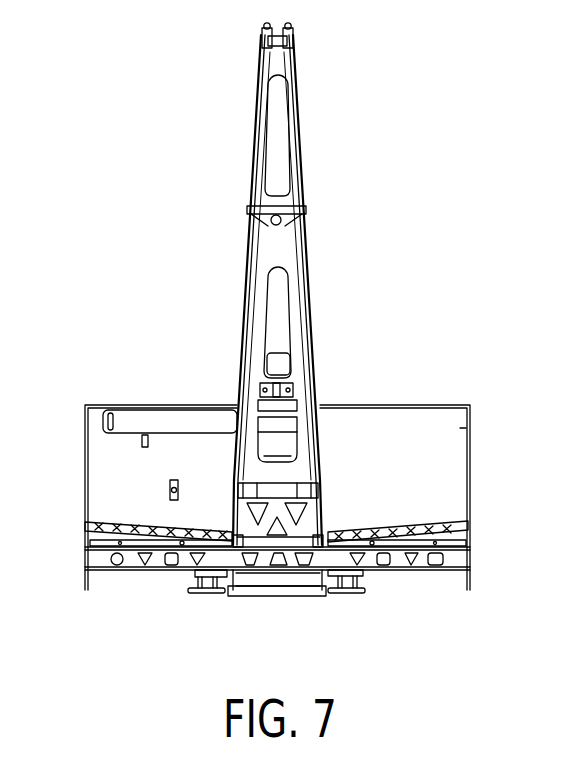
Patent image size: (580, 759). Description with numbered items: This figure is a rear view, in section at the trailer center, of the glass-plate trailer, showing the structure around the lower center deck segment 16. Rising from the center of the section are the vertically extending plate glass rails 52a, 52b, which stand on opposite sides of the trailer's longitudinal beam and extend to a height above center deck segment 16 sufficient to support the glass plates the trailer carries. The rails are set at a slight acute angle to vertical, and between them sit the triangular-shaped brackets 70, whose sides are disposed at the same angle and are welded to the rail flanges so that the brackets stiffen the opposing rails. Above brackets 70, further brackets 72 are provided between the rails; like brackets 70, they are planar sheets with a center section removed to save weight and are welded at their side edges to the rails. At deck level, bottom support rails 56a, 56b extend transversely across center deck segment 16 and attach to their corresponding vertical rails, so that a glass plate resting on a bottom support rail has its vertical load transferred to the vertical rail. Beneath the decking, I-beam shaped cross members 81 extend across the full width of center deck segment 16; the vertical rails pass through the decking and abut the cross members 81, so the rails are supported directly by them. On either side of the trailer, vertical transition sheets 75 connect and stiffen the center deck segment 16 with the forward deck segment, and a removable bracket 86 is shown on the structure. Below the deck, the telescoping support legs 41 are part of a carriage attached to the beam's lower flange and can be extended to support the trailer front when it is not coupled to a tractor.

The center deck segment 16 is at (460, 540).
The telescoping support legs 41 is at (203, 592).
The plate glass rails 52a is at (242, 323).
The plate glass rails 52b is at (316, 340).
The bottom support rail 56a is at (123, 523).
The bottom support rail 56b is at (440, 518).
The triangular-shaped brackets 70 is at (277, 245).
The brackets 72 is at (278, 65).
The vertical transition sheets 75 is at (102, 473).
The cross members 81 is at (125, 570).
The removable bracket 86 is at (120, 443).